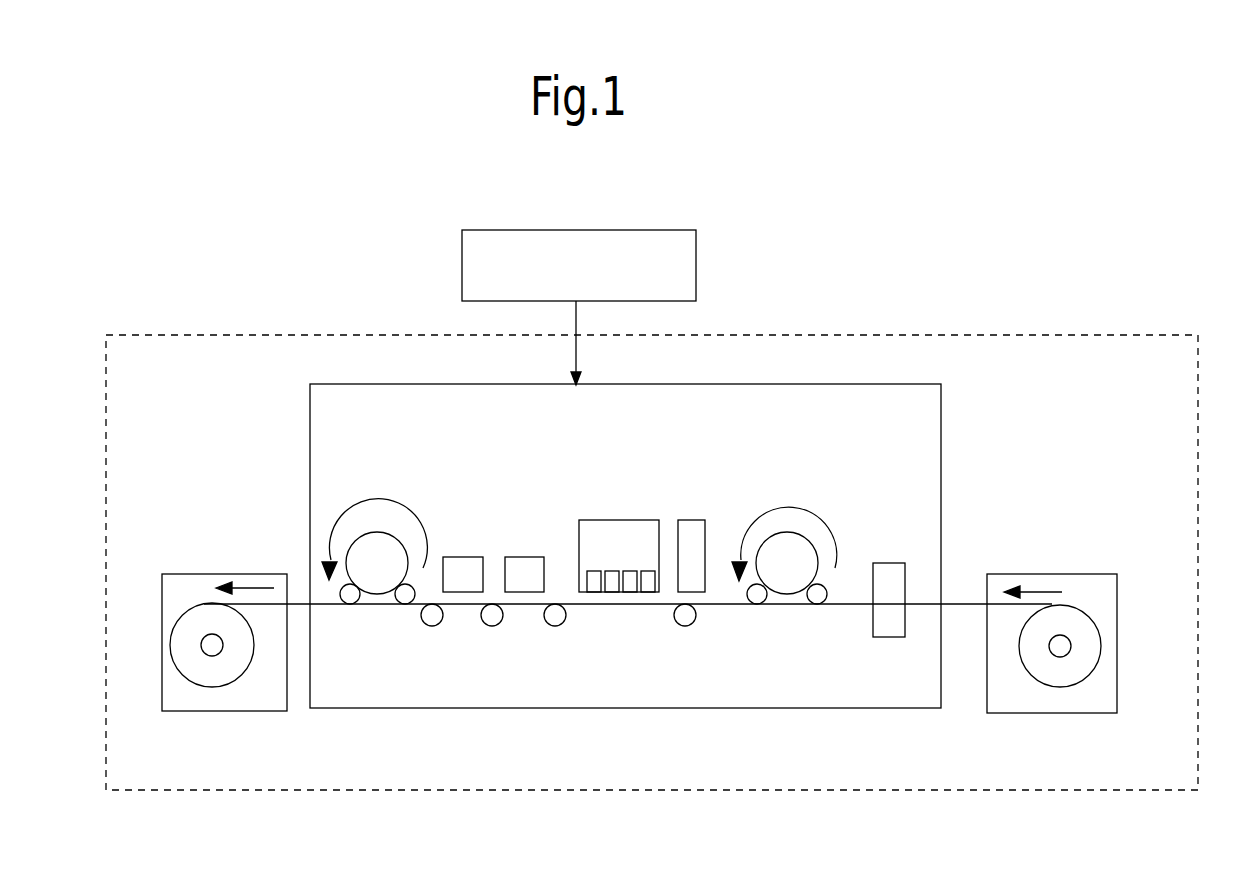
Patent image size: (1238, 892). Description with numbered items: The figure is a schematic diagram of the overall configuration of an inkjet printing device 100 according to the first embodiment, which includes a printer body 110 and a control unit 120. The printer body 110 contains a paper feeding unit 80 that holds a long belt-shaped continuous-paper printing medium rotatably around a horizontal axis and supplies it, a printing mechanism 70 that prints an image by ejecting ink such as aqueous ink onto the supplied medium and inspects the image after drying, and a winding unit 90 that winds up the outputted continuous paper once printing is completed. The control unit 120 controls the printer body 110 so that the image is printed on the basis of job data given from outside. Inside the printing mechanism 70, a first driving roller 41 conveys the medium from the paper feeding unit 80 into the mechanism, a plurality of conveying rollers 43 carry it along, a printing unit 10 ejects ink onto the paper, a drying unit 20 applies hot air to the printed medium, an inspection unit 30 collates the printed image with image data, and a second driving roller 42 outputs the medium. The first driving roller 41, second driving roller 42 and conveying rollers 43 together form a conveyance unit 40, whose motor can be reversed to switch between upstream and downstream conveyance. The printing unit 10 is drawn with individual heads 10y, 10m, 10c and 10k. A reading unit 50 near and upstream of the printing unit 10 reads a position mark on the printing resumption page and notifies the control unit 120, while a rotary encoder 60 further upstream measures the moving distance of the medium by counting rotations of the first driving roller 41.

The inkjet printing device 100 is at (1076, 182).
The printer body 110 is at (1053, 335).
The control unit 120 is at (623, 230).
The printing mechanism 70 is at (908, 385).
The winding unit 90 is at (212, 711).
The paper feeding unit 80 is at (1057, 713).
The conveyance unit 40 is at (805, 508).
The first driving roller 41 is at (784, 597).
The second driving roller 42 is at (373, 594).
The conveying rollers 43 is at (429, 627).
The inspection unit 30 is at (463, 557).
The drying unit 20 is at (520, 557).
The printing unit 10 is at (624, 491).
The yellow print head 10y is at (592, 571).
The magenta print head 10m is at (607, 571).
The cyan print head 10c is at (630, 571).
The black print head 10k is at (648, 571).
The reading unit 50 is at (699, 520).
The rotary encoder 60 is at (887, 563).